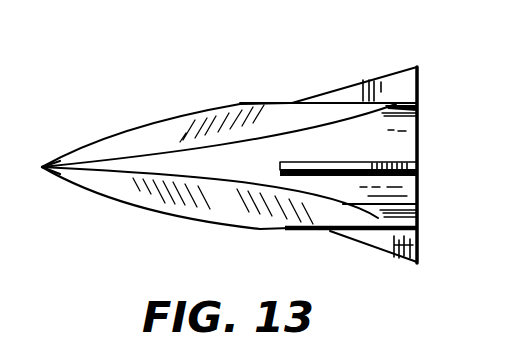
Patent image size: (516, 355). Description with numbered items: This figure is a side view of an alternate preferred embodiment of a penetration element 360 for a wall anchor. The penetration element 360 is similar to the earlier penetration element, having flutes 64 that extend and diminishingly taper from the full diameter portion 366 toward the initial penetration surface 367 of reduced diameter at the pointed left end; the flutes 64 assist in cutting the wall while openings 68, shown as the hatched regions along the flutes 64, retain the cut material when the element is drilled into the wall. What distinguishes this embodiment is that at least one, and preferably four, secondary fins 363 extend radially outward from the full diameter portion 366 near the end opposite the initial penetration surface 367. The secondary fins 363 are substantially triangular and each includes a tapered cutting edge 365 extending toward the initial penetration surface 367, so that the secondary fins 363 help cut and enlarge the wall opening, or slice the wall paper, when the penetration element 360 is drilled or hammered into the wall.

The penetration element 360 is at (264, 80).
The secondary fins 363 is at (405, 80).
The flutes 64 is at (123, 167).
The tapered cutting edge 365 is at (352, 84).
The full diameter portion 366 is at (403, 148).
The initial penetration surface 367 is at (43, 165).
The openings 68 is at (187, 130).